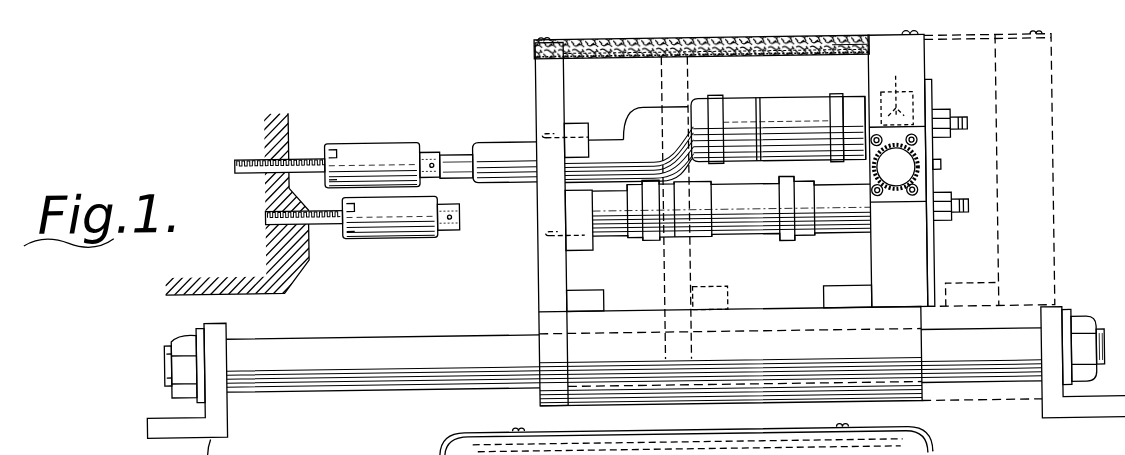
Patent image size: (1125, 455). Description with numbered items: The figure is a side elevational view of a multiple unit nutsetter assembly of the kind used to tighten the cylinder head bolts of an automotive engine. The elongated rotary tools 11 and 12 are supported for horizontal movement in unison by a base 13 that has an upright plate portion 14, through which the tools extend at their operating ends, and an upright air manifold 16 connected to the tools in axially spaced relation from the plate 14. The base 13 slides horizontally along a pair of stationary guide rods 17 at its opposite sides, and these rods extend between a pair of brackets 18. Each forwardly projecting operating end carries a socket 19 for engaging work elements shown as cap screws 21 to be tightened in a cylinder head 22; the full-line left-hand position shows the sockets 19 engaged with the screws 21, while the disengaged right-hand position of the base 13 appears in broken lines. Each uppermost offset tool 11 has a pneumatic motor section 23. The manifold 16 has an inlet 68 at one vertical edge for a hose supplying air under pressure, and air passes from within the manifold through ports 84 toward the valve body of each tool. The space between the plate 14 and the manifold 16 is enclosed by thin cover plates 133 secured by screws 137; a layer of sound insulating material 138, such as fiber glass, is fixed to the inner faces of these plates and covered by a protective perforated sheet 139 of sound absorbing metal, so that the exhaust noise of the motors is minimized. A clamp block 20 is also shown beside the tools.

The tool 11 is at (758, 90).
The tool 12 is at (741, 248).
The base 13 is at (905, 410).
The upright plate portion 14 is at (538, 88).
The air manifold 16 is at (934, 60).
The guide rods 17 is at (362, 345).
The brackets 18 is at (1098, 416).
The socket 19 is at (377, 146).
The clamp block 20 is at (650, 118).
The cap screws 21 is at (305, 155).
The cylinder head 22 is at (281, 269).
The pneumatic motor section 23 is at (800, 107).
The inlet 68 is at (908, 203).
The ports 84 is at (897, 92).
The cover plate 133 is at (577, 41).
The screws 137 is at (540, 48).
The sound insulating material 138 is at (850, 50).
The perforated sheet 139 is at (600, 58).